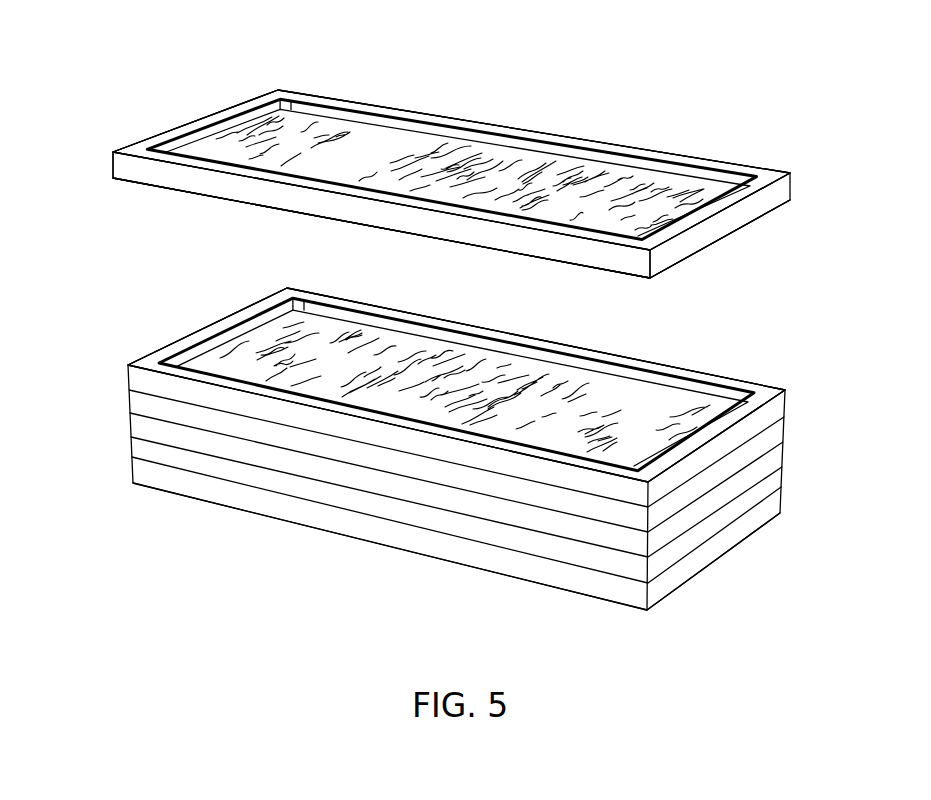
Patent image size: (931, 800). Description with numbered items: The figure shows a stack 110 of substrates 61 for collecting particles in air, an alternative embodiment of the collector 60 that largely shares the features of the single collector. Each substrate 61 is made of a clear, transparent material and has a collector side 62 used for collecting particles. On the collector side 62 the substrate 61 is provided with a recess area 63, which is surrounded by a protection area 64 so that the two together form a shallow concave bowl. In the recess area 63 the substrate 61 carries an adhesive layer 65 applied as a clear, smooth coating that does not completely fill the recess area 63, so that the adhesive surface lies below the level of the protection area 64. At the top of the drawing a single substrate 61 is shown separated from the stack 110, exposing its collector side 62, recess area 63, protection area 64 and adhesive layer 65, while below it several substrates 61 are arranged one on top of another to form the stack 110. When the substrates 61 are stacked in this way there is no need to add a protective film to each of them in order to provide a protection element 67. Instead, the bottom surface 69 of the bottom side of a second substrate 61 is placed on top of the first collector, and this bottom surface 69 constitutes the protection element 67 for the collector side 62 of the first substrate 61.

The collector 60 is at (100, 88).
The substrate 61 is at (137, 172).
The collector side 62 is at (770, 173).
The recess area 63 is at (700, 170).
The protection area 64 is at (660, 155).
The adhesive layer 65 is at (583, 177).
The protection element 67 is at (187, 195).
The bottom surface 69 is at (252, 205).
The stack 110 is at (814, 407).